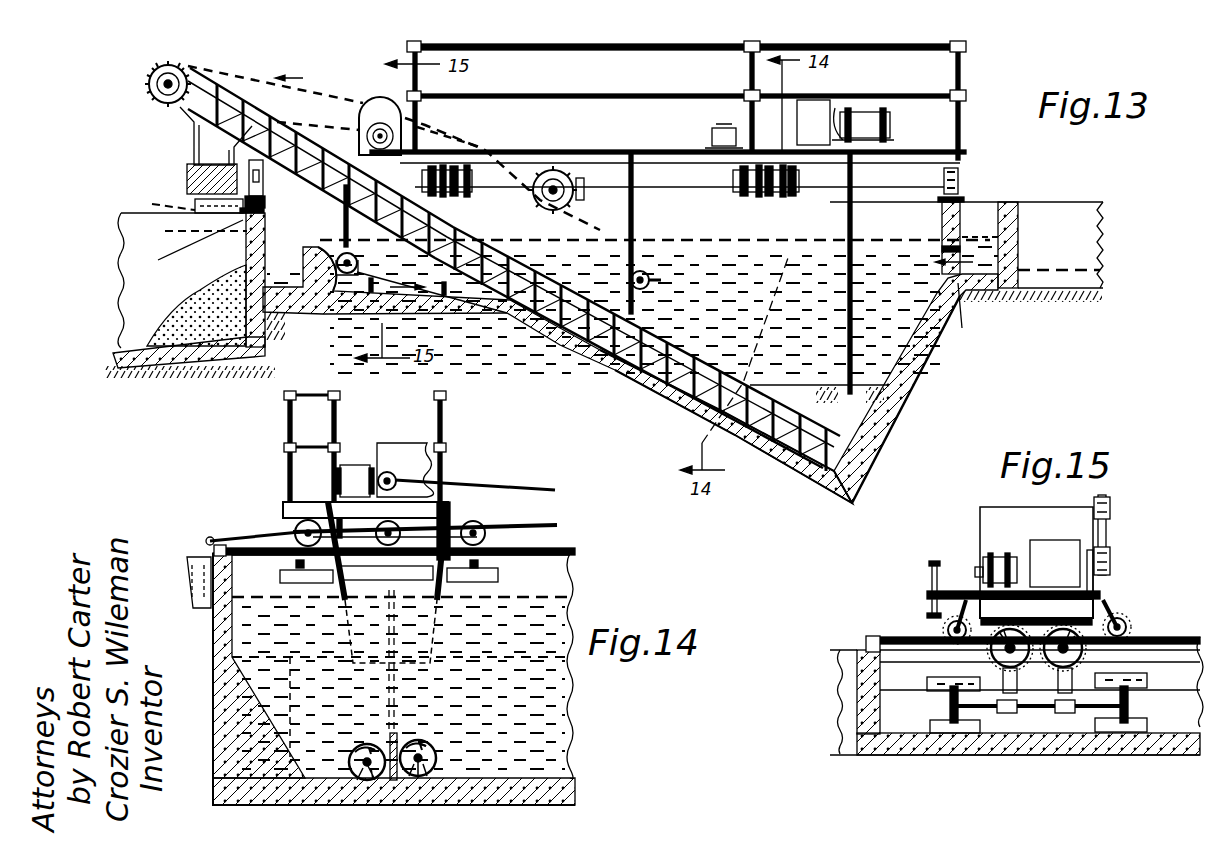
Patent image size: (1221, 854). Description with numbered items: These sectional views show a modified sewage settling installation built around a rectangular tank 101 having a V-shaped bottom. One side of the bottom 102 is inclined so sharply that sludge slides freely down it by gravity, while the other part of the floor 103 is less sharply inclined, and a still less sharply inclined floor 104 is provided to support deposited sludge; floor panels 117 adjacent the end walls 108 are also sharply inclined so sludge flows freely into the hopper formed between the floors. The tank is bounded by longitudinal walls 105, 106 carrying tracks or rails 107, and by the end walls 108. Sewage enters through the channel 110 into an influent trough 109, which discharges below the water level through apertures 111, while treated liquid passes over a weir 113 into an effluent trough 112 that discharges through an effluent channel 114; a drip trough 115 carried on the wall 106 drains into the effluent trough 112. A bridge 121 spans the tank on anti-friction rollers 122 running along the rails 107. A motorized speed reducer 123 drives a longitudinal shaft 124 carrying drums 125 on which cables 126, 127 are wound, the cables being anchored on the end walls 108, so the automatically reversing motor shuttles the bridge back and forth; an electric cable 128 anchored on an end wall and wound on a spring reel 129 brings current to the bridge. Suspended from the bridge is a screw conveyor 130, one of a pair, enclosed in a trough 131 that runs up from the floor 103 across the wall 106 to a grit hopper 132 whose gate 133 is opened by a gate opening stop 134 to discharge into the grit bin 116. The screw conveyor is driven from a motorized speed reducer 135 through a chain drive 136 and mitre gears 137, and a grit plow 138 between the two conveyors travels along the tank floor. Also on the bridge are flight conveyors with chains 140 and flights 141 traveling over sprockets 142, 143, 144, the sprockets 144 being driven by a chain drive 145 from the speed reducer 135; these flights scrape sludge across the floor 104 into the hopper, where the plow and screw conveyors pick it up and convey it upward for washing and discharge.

In FIG. 13, the rectangular tank 101 is at (905, 412).
In FIG. 14, the rectangular tank 101 is at (578, 790).
In FIG. 15, the rectangular tank 101 is at (880, 760).
In FIG. 13, the sharply inclined side of bottom 102 is at (925, 372).
In FIG. 13, the floor 103 is at (632, 386).
In FIG. 14, the floor 103 is at (512, 800).
In FIG. 13, the floor 104 is at (373, 312).
In FIG. 15, the floor 104 is at (1038, 755).
In FIG. 13, the longitudinal wall 105 is at (942, 213).
In FIG. 13, the longitudinal wall 106 is at (246, 243).
In FIG. 14, the longitudinal wall 106 is at (556, 577).
In FIG. 15, the longitudinal wall 106 is at (857, 668).
In FIG. 13, the tracks or rails 107 is at (263, 217).
In FIG. 14, the tracks or rails 107 is at (562, 550).
In FIG. 15, the tracks or rails 107 is at (886, 625).
In FIG. 13, the end walls 108 is at (866, 215).
In FIG. 14, the end walls 108 is at (213, 623).
In FIG. 15, the end walls 108 is at (872, 712).
In FIG. 13, the influent trough 109 is at (992, 292).
In FIG. 13, the channel 110 is at (1064, 268).
In FIG. 13, the apertures 111 is at (963, 330).
In FIG. 13, the effluent trough 112 is at (278, 325).
In FIG. 13, the weir 113 is at (314, 249).
In FIG. 15, the weir 113 is at (872, 695).
In FIG. 15, the effluent channel 114 is at (850, 690).
In FIG. 13, the drip trough 115 is at (182, 202).
In FIG. 13, the grit bin 116 is at (142, 299).
In FIG. 14, the floor panels 117 is at (270, 735).
In FIG. 13, the bridge 121 is at (920, 151).
In FIG. 14, the bridge 121 is at (366, 475).
In FIG. 15, the bridge 121 is at (1102, 596).
In FIG. 13, the anti-friction rollers 122 is at (265, 201).
In FIG. 14, the anti-friction rollers 122 is at (300, 522).
In FIG. 15, the anti-friction rollers 122 is at (943, 631).
In FIG. 13, the motorized speed reducer 123 is at (850, 103).
In FIG. 13, the longitudinal shaft 124 is at (662, 190).
In FIG. 14, the longitudinal shaft 124 is at (372, 540).
In FIG. 13, the drums 125 is at (455, 193).
In FIG. 14, the drums 125 is at (395, 542).
In FIG. 13, the cable 126 is at (443, 165).
In FIG. 14, the cable 126 is at (535, 524).
In FIG. 13, the cable 127 is at (467, 165).
In FIG. 14, the cable 127 is at (250, 538).
In FIG. 14, the electric cable 128 is at (512, 484).
In FIG. 13, the spring reel 129 is at (712, 130).
In FIG. 14, the spring reel 129 is at (392, 472).
In FIG. 13, the screw conveyor 130 is at (650, 335).
In FIG. 14, the screw conveyor 130 is at (362, 782).
In FIG. 15, the screw conveyor 130 is at (1003, 660).
In FIG. 13, the trough 131 is at (500, 305).
In FIG. 14, the trough 131 is at (352, 465).
In FIG. 15, the trough 131 is at (990, 650).
In FIG. 13, the grit hopper 132 is at (194, 142).
In FIG. 13, the gate 133 is at (187, 182).
In FIG. 13, the gate opening stop 134 is at (202, 244).
In FIG. 13, the motorized speed reducer 135 is at (380, 103).
In FIG. 14, the motorized speed reducer 135 is at (384, 444).
In FIG. 15, the motorized speed reducer 135 is at (1050, 548).
In FIG. 13, the chain drive 136 is at (336, 99).
In FIG. 15, the chain drive 136 is at (1108, 550).
In FIG. 13, the mitre gears 137 is at (149, 90).
In FIG. 15, the mitre gears 137 is at (1016, 508).
In FIG. 13, the grit plow 138 is at (829, 392).
In FIG. 14, the grit plow 138 is at (398, 738).
In FIG. 13, the chains 140 is at (584, 192).
In FIG. 14, the chains 140 is at (340, 590).
In FIG. 13, the flights 141 is at (430, 300).
In FIG. 14, the flights 141 is at (283, 577).
In FIG. 15, the flights 141 is at (937, 672).
In FIG. 13, the sprocket 142 is at (346, 276).
In FIG. 15, the sprocket 142 is at (950, 705).
In FIG. 13, the sprocket 143 is at (648, 286).
In FIG. 13, the sprockets 144 is at (556, 212).
In FIG. 14, the sprockets 144 is at (300, 546).
In FIG. 13, the chain drive 145 is at (452, 140).
In FIG. 15, the chain drive 145 is at (1095, 585).